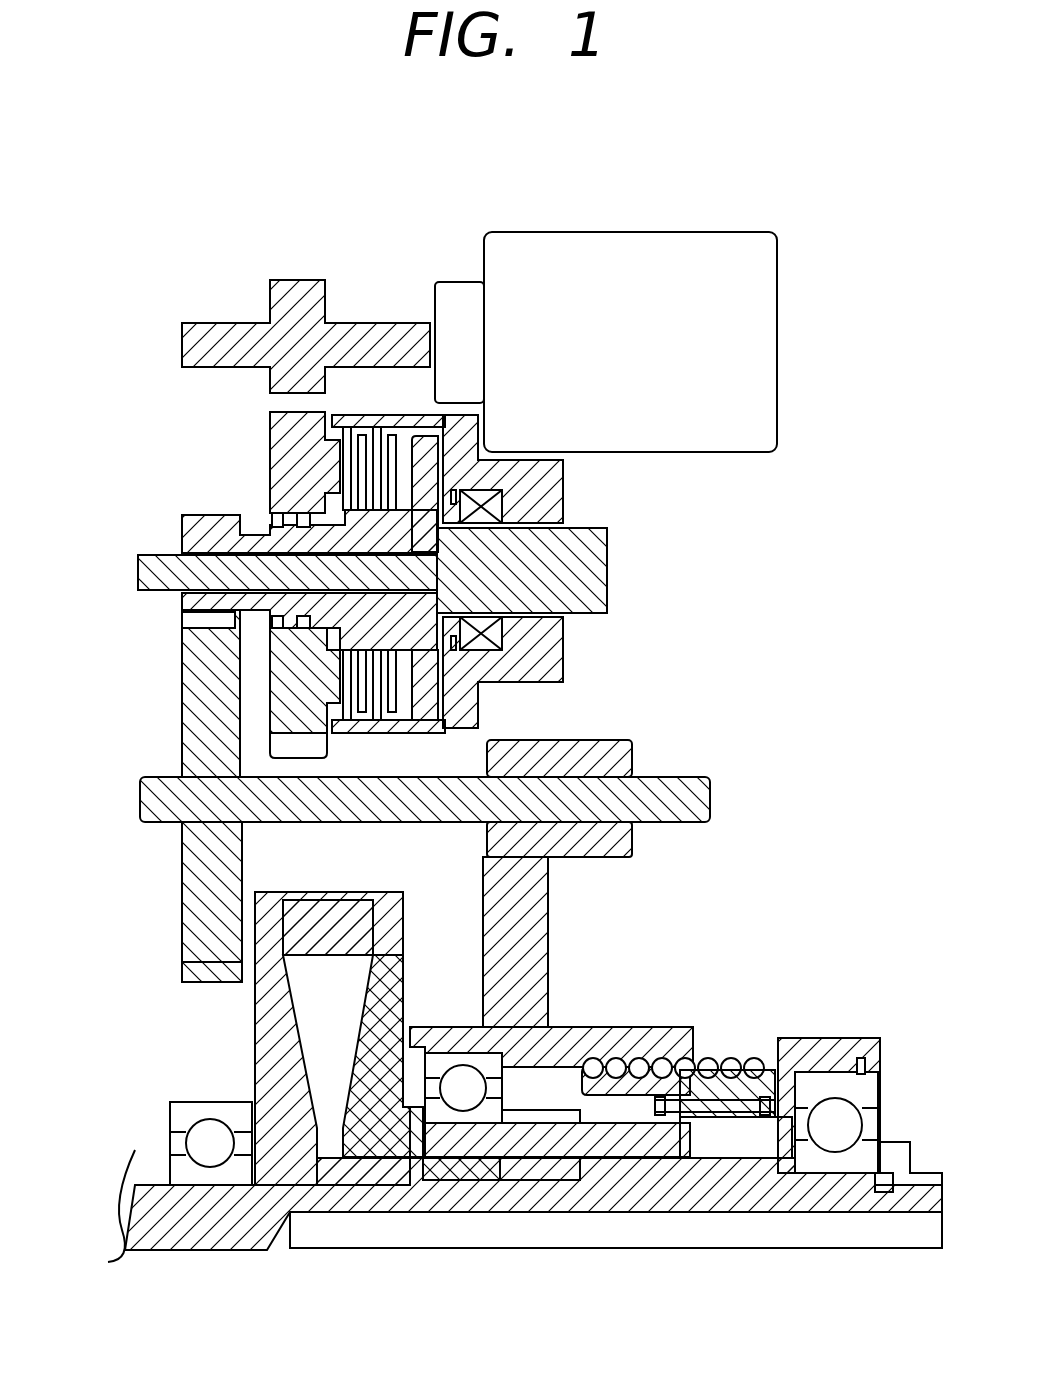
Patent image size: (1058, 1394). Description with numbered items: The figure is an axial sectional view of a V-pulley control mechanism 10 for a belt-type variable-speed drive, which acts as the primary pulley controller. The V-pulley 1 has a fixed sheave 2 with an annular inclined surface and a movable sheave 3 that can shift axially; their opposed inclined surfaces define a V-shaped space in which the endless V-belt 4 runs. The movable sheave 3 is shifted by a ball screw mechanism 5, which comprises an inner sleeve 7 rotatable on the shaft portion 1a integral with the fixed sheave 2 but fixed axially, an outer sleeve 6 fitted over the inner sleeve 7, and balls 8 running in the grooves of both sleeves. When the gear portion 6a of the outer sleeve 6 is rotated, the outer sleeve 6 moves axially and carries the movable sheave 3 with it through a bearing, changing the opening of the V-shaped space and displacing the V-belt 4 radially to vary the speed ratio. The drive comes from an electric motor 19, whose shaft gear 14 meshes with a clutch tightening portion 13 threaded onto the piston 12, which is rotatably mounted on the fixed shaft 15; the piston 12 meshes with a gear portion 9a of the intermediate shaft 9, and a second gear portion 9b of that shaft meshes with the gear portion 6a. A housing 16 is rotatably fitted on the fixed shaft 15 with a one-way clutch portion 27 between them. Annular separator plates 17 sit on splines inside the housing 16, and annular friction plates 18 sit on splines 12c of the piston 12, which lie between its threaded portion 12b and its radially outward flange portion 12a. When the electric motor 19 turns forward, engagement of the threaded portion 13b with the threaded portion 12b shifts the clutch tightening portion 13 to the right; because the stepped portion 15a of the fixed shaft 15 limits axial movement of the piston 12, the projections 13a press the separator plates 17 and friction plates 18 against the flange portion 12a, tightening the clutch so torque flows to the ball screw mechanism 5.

The V-pulley 1 is at (206, 1056).
The shaft portion 1a is at (760, 1200).
The fixed sheave 2 is at (255, 1002).
The movable sheave 3 is at (403, 968).
The V-belt 4 is at (328, 905).
The ball screw mechanism 5 is at (716, 1036).
The outer sleeve 6 is at (548, 940).
The gear portion 6a is at (515, 870).
The inner sleeve 7 is at (750, 1050).
The balls 8 is at (633, 1030).
The intermediate shaft 9 is at (712, 800).
The gear portion 9a is at (200, 640).
The gear portion 9b is at (600, 742).
The V-pulley control mechanism 10 is at (722, 636).
The piston 12 is at (285, 540).
The flange portion 12a is at (430, 445).
The threaded portion 12b is at (250, 575).
The splines 12c is at (450, 578).
The clutch tightening portion 13 is at (270, 440).
The projections 13a is at (328, 683).
The threaded portion 13b is at (295, 655).
The gear 14 is at (272, 300).
The fixed shaft 15 is at (600, 590).
The stepped portion 15a is at (437, 550).
The housing 16 is at (563, 490).
The separator plates 17 is at (348, 430).
The friction plates 18 is at (390, 440).
The electric motor 19 is at (765, 342).
The one-way clutch portion 27 is at (525, 635).